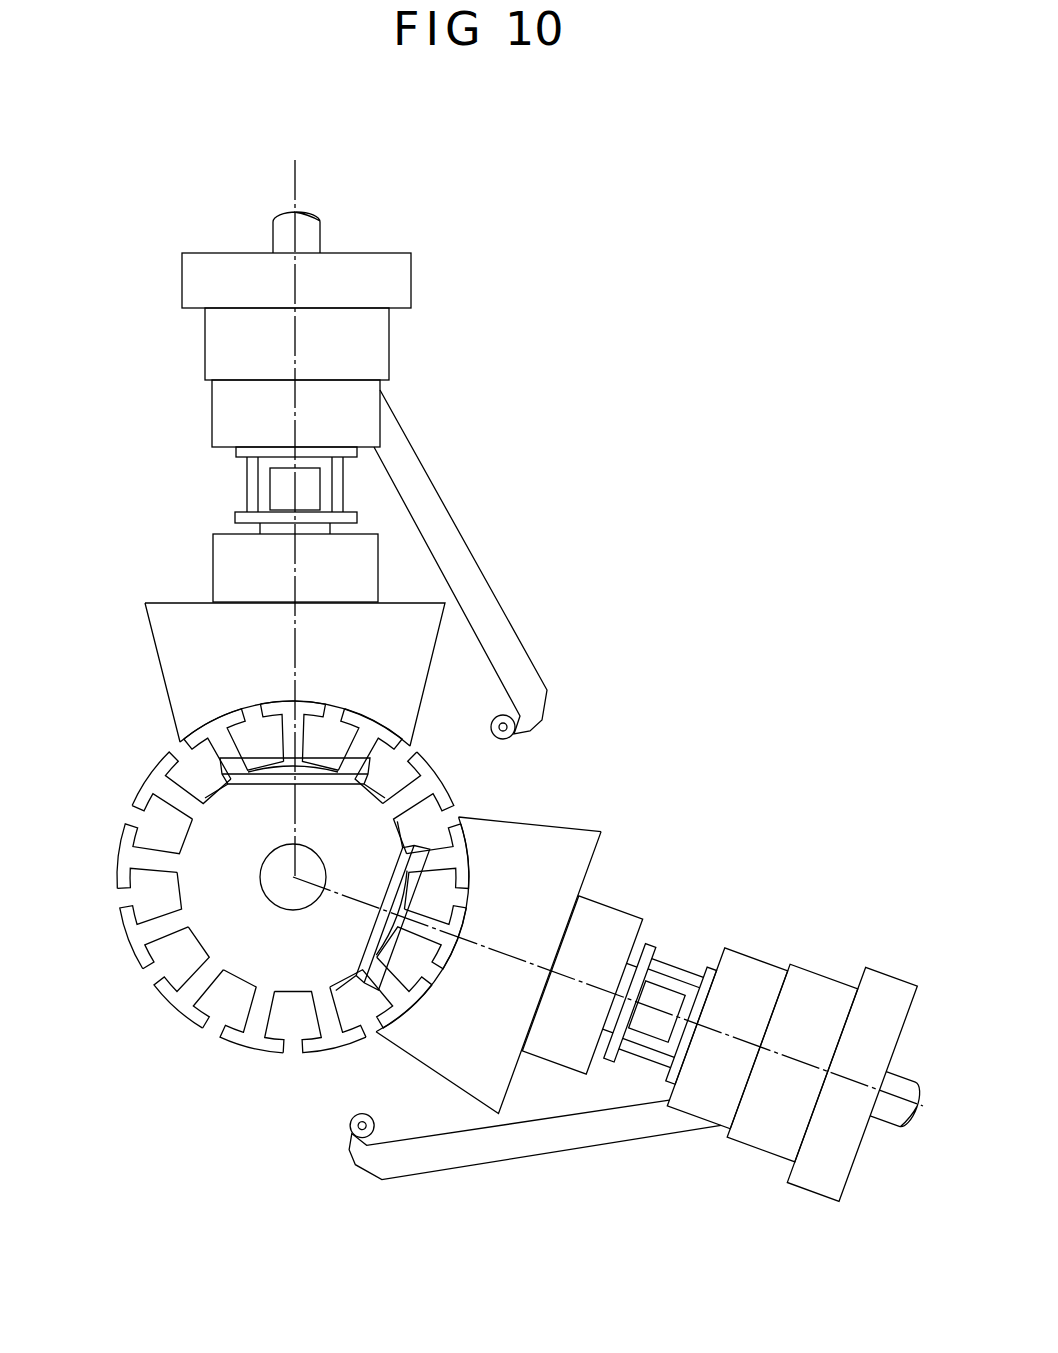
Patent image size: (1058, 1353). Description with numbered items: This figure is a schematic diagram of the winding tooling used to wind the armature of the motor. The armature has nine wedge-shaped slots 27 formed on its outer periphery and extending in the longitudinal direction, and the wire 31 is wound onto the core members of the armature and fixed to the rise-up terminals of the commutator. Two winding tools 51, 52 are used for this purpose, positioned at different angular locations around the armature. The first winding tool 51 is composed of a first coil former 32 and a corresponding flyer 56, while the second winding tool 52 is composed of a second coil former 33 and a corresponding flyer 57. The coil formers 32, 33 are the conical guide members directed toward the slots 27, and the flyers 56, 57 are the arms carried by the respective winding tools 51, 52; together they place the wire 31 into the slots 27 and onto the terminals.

The slots 27 is at (143, 882).
The wire 31 is at (328, 788).
The first coil former 32 is at (185, 686).
The second coil former 33 is at (437, 1052).
The winding tool 51 is at (418, 358).
The winding tool 52 is at (757, 940).
The flyer 56 is at (470, 566).
The flyer 57 is at (527, 1148).